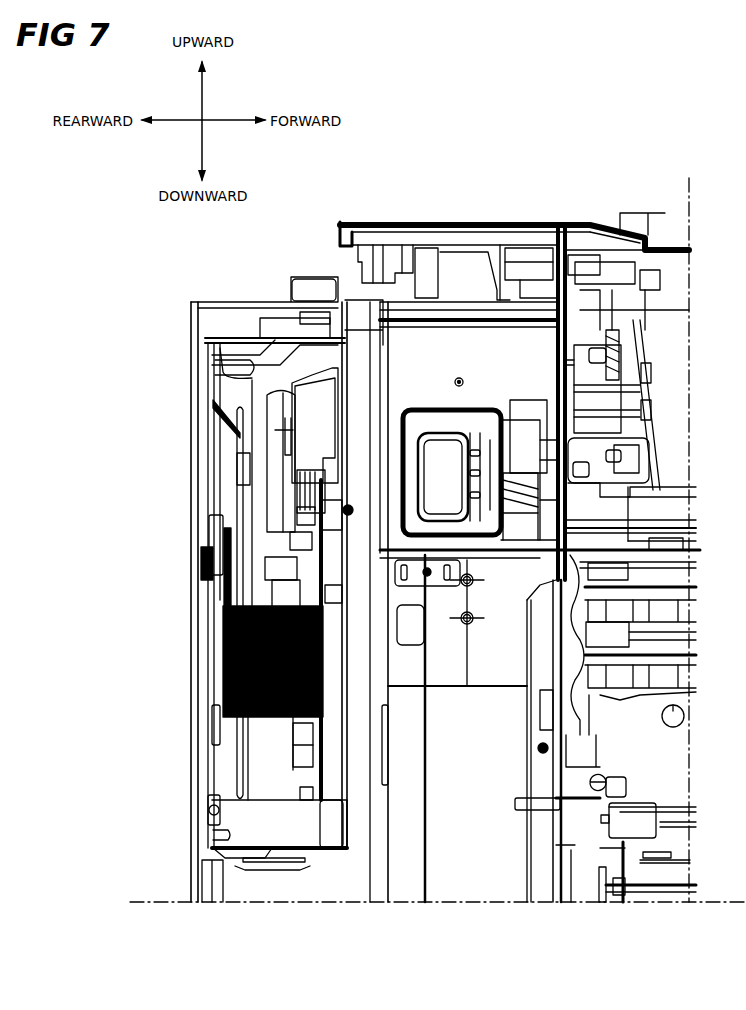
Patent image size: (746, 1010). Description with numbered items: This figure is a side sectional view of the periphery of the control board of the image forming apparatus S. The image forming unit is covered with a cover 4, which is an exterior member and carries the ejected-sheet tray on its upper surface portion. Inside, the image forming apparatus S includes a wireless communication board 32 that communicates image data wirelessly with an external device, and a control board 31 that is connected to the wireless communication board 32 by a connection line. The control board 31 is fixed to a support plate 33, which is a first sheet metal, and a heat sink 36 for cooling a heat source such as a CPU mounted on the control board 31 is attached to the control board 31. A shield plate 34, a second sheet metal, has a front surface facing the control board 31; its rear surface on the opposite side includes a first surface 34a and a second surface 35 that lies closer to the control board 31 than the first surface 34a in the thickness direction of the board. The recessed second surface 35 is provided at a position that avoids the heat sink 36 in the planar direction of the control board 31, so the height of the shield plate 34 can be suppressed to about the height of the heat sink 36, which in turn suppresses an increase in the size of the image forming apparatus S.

The image forming apparatus S is at (418, 222).
The cover 4 is at (190, 402).
The second surface 35 is at (238, 482).
The wireless communication board 32 is at (212, 534).
The shield plate 34 is at (212, 660).
The first surface 34a is at (273, 717).
The heat sink 36 is at (275, 752).
The control board 31 is at (345, 766).
The support plate 33 is at (312, 852).